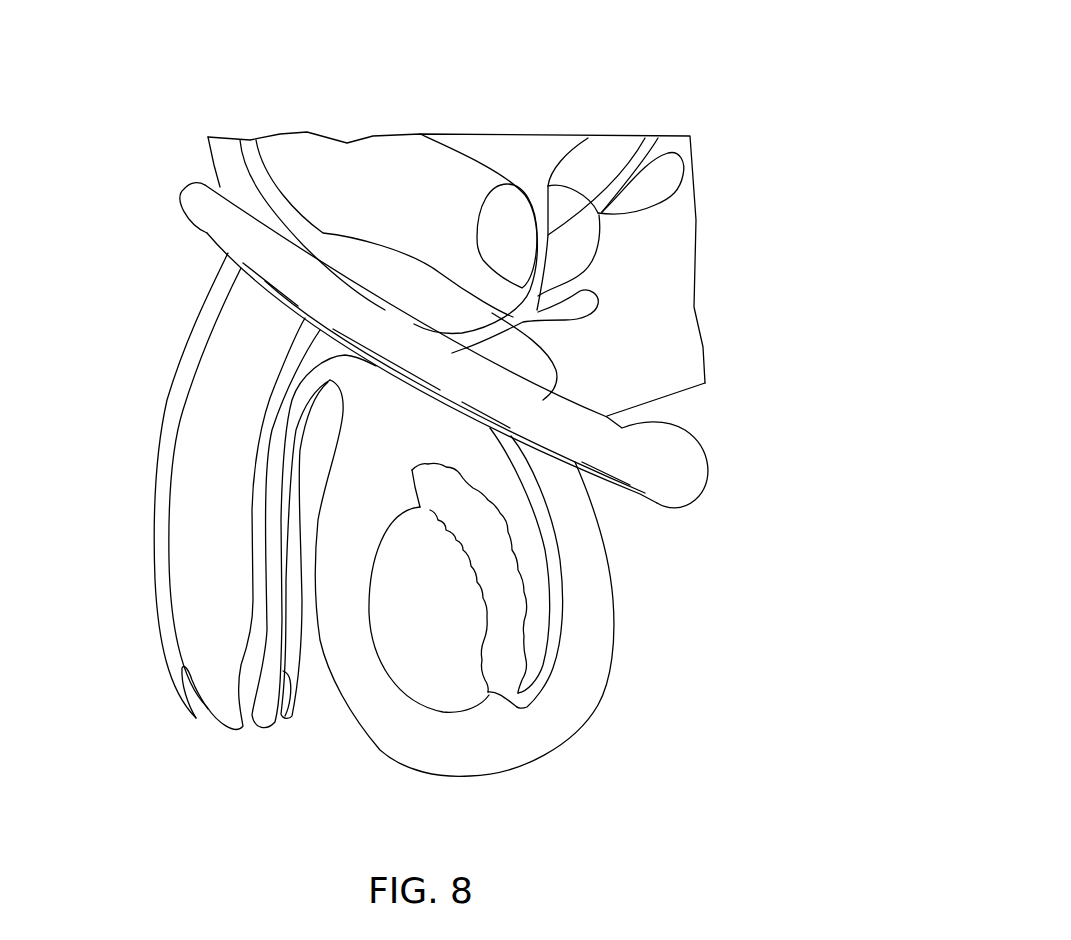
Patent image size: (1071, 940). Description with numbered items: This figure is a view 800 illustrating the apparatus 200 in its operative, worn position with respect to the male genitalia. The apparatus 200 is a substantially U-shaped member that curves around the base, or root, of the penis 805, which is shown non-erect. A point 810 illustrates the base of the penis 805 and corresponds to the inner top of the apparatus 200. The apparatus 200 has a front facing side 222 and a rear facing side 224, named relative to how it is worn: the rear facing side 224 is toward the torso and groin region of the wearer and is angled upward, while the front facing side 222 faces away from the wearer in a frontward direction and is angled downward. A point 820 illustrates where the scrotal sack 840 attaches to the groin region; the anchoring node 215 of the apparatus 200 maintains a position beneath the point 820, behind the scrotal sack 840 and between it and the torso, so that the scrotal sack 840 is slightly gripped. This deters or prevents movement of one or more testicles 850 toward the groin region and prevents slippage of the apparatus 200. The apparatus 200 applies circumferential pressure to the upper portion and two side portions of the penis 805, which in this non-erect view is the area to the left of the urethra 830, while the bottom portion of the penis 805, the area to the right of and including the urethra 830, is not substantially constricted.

The view 800 is at (665, 72).
The penis 805 is at (133, 427).
The point 810 is at (220, 188).
The point 820 is at (607, 416).
The urethra 830 is at (263, 623).
The scrotal sack 840 is at (613, 637).
The testicles 850 is at (428, 670).
The apparatus 200 is at (652, 512).
The anchoring node 215 is at (680, 468).
The front facing side 222 is at (287, 307).
The rear facing side 224 is at (520, 380).